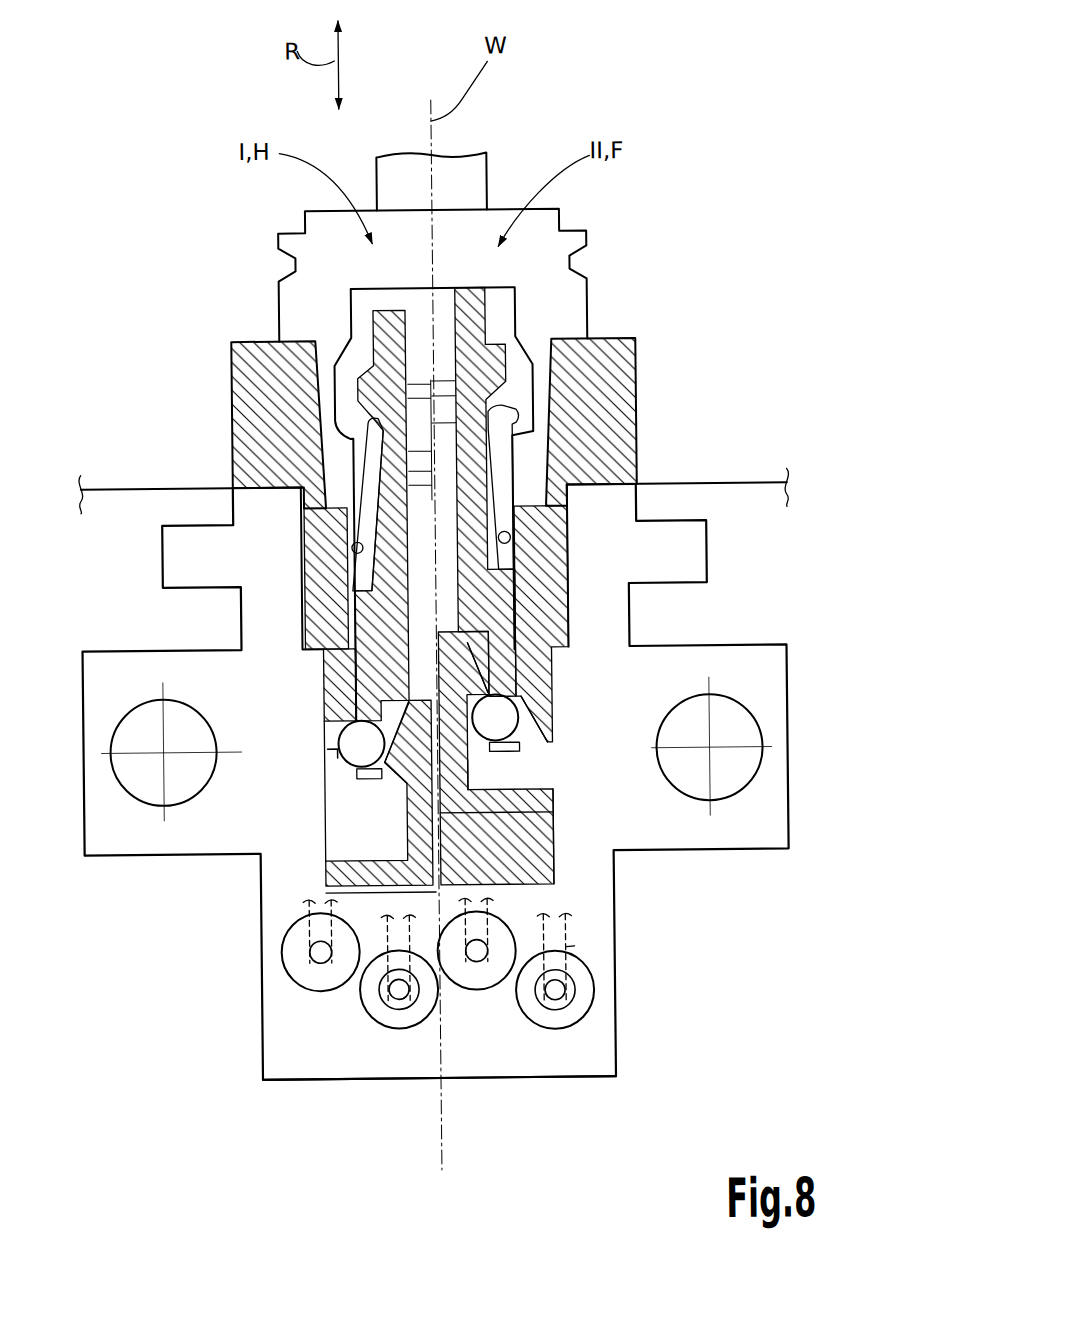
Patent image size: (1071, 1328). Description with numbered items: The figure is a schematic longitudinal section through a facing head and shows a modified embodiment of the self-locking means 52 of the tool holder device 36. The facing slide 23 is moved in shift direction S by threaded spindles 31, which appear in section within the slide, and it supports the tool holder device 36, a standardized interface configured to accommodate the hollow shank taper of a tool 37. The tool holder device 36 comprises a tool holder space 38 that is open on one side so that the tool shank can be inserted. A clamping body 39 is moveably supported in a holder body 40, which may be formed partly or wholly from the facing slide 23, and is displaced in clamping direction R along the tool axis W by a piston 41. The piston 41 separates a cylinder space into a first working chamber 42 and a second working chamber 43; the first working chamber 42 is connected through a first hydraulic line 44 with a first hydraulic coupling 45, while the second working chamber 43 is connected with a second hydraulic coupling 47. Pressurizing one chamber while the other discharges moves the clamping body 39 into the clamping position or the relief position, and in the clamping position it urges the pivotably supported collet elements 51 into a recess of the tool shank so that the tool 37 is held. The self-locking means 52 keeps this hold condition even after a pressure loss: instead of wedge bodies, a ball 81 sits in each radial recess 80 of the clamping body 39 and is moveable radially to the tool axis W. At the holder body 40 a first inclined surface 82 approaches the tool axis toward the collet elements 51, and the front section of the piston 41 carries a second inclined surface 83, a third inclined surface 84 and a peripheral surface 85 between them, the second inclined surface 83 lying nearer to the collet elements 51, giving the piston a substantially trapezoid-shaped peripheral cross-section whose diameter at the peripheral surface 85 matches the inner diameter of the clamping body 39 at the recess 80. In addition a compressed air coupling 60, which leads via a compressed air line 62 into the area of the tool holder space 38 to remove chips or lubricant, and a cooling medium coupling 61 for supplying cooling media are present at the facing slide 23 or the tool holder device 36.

The facing slide 23 is at (757, 673).
The threaded spindle 31 is at (147, 778).
The tool holder device 36 is at (614, 230).
The tool 37 is at (467, 172).
The tool holder space 38 is at (547, 345).
The clamping body 39 is at (480, 502).
The holder body 40 is at (538, 548).
The piston 41 is at (455, 807).
The first working chamber 42 is at (522, 877).
The second working chamber 43 is at (337, 797).
The first hydraulic line 44 is at (485, 937).
The first hydraulic coupling 45 is at (471, 962).
The second hydraulic coupling 47 is at (315, 962).
The collet elements 51 is at (355, 425).
The self-locking means 52 is at (267, 682).
The compressed air coupling 60 is at (551, 1001).
The cooling medium coupling 61 is at (395, 1000).
The compressed air line 62 is at (563, 948).
The radial recess 80 is at (512, 748).
The ball 81 is at (498, 718).
The first inclined surface 82 is at (337, 752).
The second inclined surface 83 is at (398, 707).
The third inclined surface 84 is at (402, 790).
The peripheral surface 85 is at (498, 668).